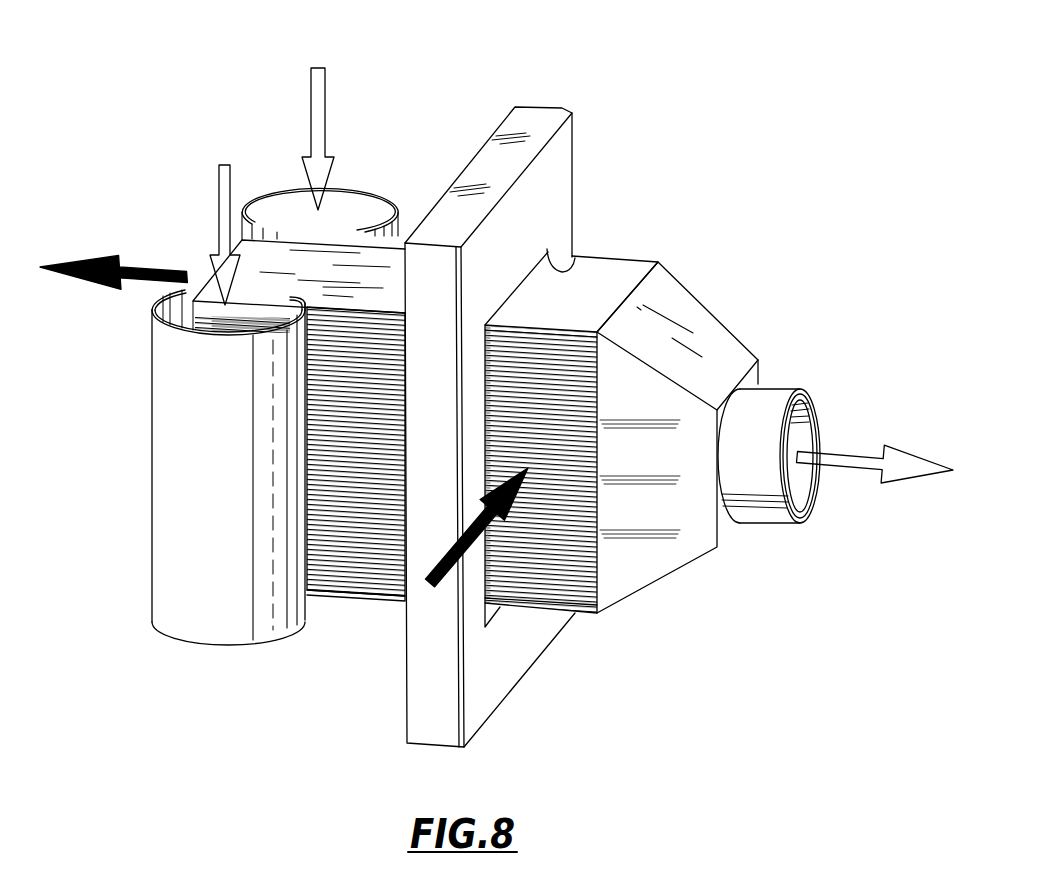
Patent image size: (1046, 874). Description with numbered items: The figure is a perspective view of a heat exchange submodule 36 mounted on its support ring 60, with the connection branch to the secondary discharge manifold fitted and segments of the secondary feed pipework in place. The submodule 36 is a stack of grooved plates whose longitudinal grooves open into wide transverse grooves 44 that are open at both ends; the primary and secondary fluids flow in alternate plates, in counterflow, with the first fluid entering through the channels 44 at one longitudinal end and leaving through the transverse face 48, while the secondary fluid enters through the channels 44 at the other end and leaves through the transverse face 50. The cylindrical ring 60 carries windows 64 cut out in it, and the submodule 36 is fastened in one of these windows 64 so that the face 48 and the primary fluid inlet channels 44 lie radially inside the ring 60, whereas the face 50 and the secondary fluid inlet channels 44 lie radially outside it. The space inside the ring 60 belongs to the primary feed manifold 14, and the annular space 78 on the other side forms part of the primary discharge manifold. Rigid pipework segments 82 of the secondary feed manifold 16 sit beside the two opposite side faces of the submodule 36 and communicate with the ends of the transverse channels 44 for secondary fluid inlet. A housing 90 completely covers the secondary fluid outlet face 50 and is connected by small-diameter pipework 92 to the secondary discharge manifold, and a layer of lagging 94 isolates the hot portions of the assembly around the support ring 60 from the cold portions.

The primary feed manifold 14 is at (575, 482).
The secondary feed manifold 16 is at (278, 142).
The submodule 36 is at (598, 268).
The transverse groove 44 is at (565, 353).
The transverse face 48 is at (193, 298).
The transverse face 50 is at (643, 283).
The cylindrical ring 60 is at (567, 135).
The window 64 is at (574, 252).
The annular space 78 is at (356, 473).
The pipework segment 82 is at (361, 203).
The housing 90 is at (687, 307).
The pipework 92 is at (773, 400).
The lagging 94 is at (535, 118).